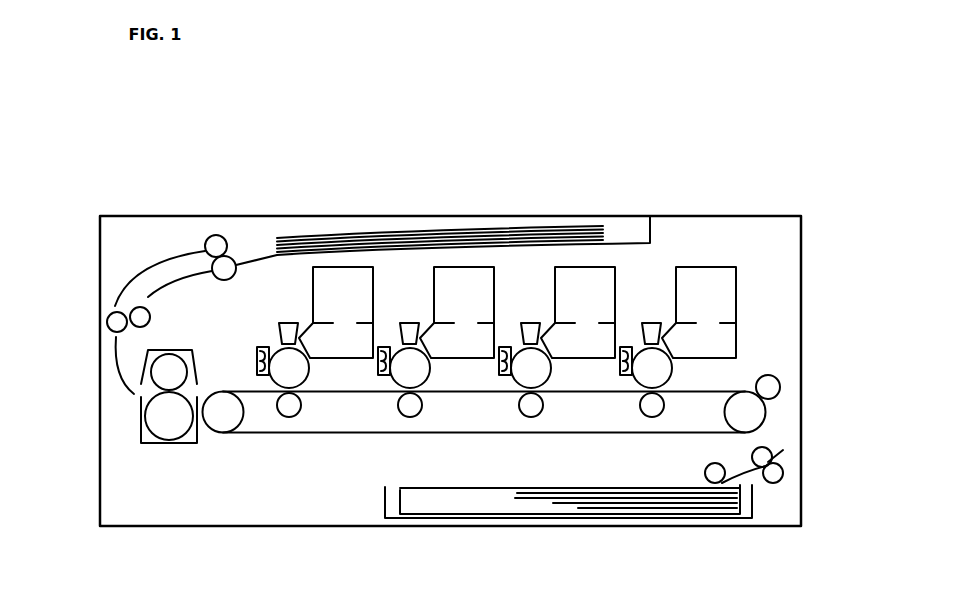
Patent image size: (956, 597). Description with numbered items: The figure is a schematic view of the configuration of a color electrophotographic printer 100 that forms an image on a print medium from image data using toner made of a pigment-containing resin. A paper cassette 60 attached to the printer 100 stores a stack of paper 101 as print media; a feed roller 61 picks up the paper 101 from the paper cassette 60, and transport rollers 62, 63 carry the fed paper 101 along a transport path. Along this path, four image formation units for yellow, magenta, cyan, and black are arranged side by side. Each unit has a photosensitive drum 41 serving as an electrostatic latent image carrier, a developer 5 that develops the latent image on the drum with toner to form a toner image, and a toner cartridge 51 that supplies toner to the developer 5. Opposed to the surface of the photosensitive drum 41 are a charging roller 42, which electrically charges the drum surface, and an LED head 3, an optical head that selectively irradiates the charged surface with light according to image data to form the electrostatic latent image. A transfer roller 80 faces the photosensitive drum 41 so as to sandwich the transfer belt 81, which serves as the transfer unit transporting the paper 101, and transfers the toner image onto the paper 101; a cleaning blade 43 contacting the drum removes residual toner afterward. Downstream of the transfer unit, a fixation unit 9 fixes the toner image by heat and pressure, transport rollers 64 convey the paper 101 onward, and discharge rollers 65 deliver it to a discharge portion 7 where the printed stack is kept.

The printer 100 is at (773, 216).
The LED head 3 is at (730, 377).
The photosensitive drum 41 is at (673, 364).
The charging roller 42 is at (624, 347).
The cleaning blade 43 is at (633, 372).
The developer 5 is at (738, 307).
The toner cartridge 51 is at (729, 267).
The discharge portion 7 is at (413, 228).
The transfer roller 80 is at (653, 418).
The transfer belt 81 is at (263, 434).
The fixation unit 9 is at (140, 425).
The paper cassette 60 is at (613, 514).
The paper 101 is at (439, 509).
The feed roller 61 is at (748, 478).
The transport roller 62 is at (785, 472).
The transport roller 63 is at (781, 389).
The transport rollers 64 is at (107, 323).
The discharge rollers 65 is at (212, 234).